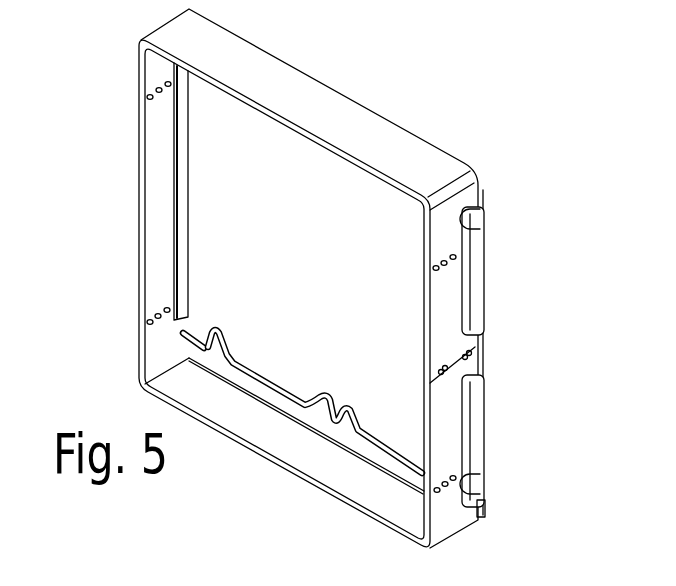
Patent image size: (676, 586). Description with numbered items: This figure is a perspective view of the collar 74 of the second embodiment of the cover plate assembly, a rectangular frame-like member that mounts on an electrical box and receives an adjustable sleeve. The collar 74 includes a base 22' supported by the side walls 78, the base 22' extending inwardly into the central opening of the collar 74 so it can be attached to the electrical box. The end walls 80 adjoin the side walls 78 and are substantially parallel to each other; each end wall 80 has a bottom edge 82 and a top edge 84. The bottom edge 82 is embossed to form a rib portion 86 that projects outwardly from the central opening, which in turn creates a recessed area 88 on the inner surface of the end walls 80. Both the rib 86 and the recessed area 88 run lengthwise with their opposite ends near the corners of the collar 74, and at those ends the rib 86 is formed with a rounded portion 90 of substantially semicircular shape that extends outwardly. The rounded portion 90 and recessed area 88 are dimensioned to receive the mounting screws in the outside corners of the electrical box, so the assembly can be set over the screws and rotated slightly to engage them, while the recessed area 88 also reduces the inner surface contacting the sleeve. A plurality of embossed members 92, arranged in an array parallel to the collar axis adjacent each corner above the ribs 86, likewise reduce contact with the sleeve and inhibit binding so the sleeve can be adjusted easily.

The base 22' is at (302, 389).
The collar 74 is at (403, 146).
The side walls 78 is at (291, 451).
The end walls 80 is at (157, 234).
The bottom edge 82 is at (188, 222).
The top edge 84 is at (138, 181).
The rib portion 86 is at (485, 281).
The recessed area 88 is at (180, 249).
The rounded portion 90 is at (483, 220).
The embossed members 92 is at (447, 500).